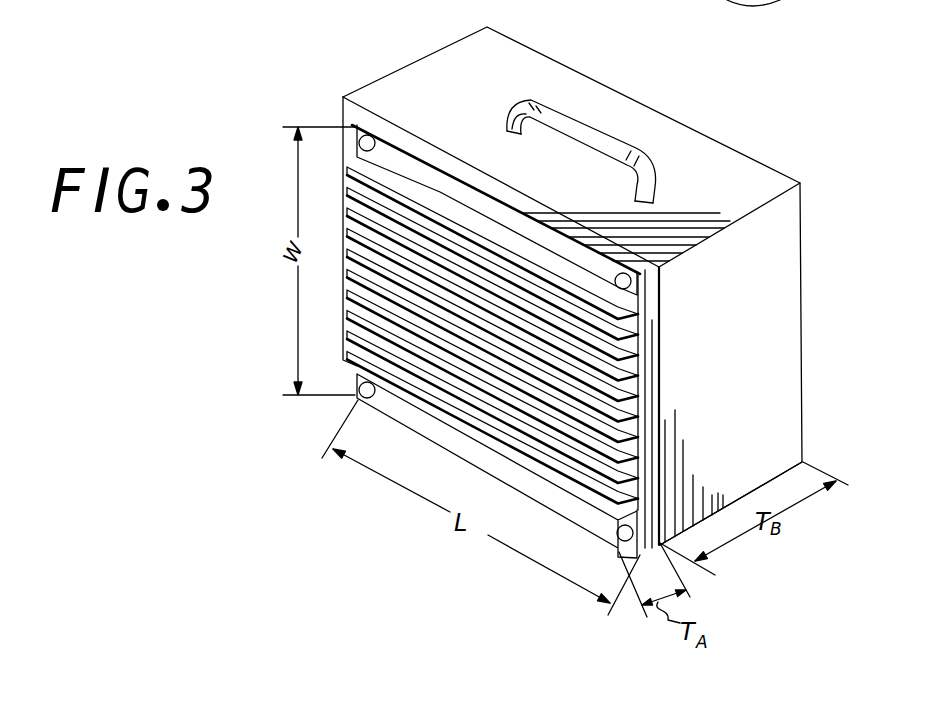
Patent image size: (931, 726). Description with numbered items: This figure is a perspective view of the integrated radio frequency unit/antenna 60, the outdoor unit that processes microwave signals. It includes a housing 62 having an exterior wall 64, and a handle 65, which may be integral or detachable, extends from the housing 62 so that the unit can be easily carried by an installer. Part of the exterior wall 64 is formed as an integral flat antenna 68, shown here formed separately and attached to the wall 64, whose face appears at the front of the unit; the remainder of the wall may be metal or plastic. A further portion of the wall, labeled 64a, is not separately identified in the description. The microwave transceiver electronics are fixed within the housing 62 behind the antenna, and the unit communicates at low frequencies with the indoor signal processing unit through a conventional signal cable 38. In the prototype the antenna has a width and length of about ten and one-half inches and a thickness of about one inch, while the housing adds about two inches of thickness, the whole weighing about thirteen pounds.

The integrated radio frequency unit/antenna 60 is at (408, 52).
The housing 62 is at (784, 245).
The exterior wall 64 is at (700, 162).
The top wall edge 64a is at (358, 123).
The handle 65 is at (556, 108).
The flat antenna 68 is at (634, 391).
The signal cable 38 is at (848, 418).